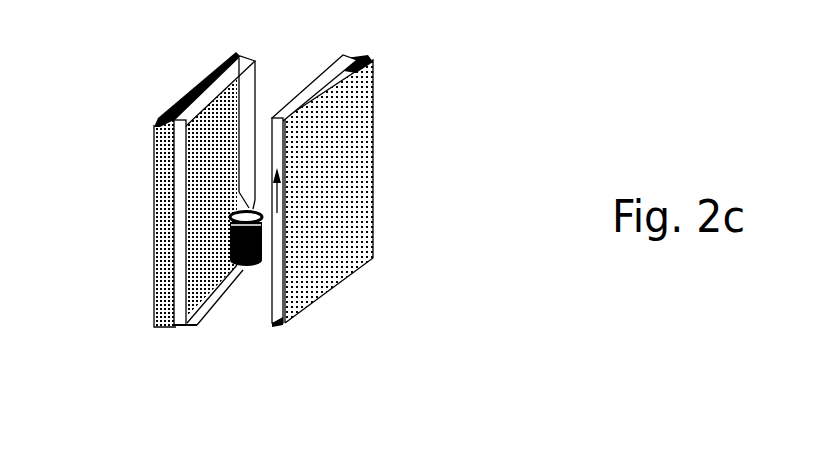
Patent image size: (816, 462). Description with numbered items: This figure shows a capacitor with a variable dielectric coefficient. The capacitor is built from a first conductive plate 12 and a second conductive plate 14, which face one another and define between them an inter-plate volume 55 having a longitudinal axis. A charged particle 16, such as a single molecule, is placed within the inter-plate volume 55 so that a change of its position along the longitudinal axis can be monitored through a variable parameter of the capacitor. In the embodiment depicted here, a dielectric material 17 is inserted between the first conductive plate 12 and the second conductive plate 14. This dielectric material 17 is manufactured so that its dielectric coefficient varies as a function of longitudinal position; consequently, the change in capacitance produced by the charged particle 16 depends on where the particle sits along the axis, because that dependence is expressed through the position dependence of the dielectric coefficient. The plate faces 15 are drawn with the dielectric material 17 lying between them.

The first conductive plate 12 is at (190, 75).
The second conductive plate 14 is at (348, 72).
The electrode plate 15 is at (153, 200).
The charged particle 16 is at (251, 280).
The dielectric material 17 is at (177, 330).
The inter-plate volume 55 is at (294, 68).